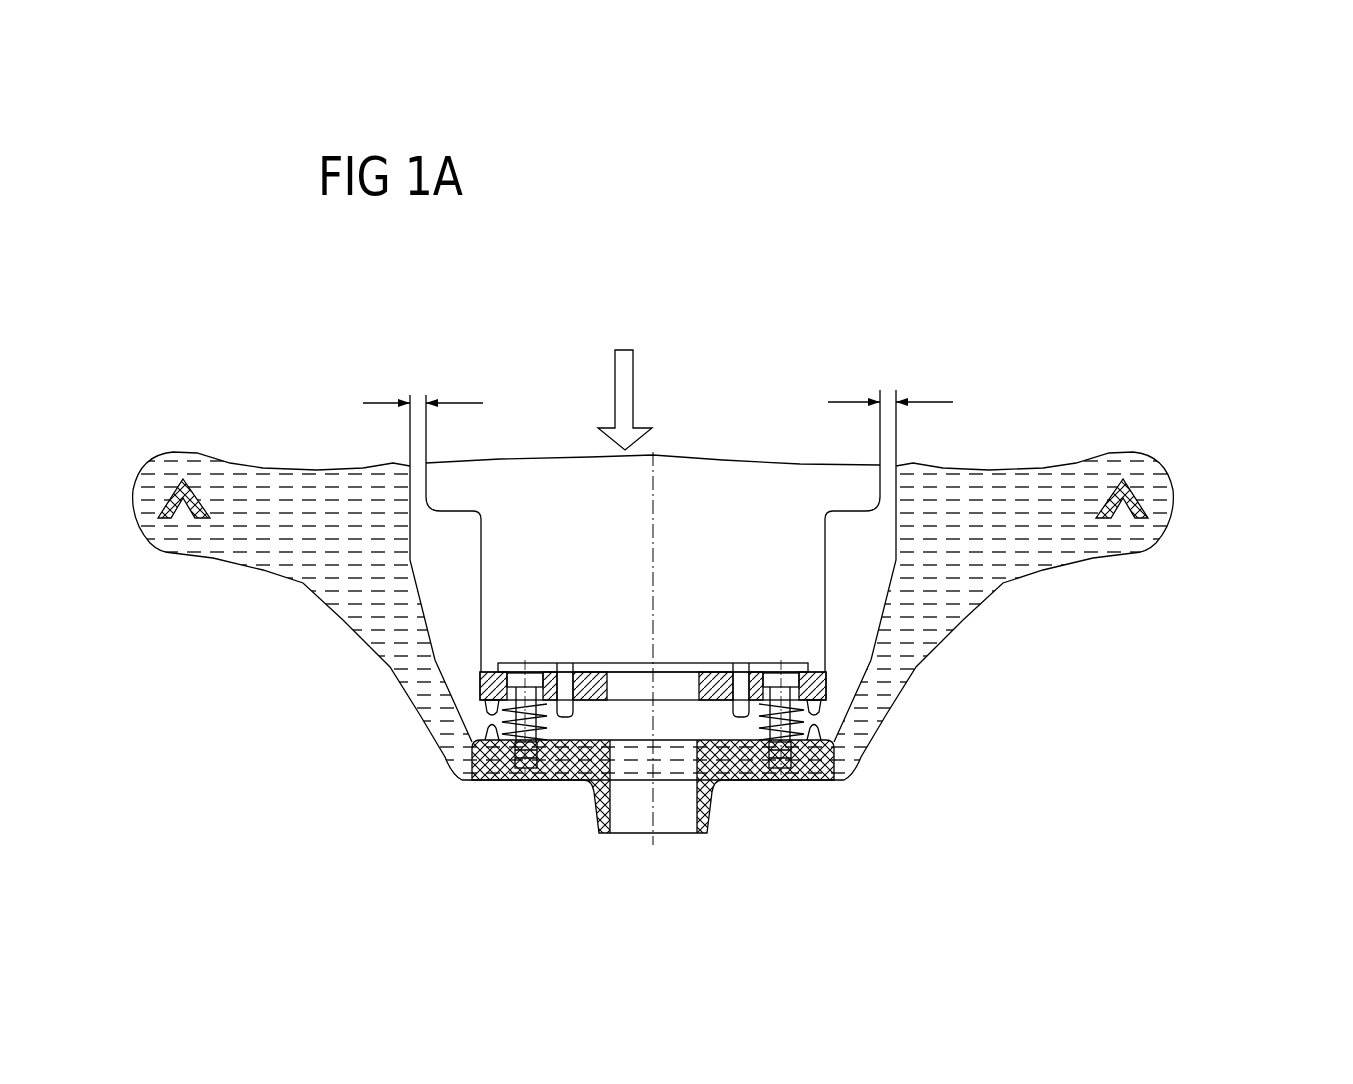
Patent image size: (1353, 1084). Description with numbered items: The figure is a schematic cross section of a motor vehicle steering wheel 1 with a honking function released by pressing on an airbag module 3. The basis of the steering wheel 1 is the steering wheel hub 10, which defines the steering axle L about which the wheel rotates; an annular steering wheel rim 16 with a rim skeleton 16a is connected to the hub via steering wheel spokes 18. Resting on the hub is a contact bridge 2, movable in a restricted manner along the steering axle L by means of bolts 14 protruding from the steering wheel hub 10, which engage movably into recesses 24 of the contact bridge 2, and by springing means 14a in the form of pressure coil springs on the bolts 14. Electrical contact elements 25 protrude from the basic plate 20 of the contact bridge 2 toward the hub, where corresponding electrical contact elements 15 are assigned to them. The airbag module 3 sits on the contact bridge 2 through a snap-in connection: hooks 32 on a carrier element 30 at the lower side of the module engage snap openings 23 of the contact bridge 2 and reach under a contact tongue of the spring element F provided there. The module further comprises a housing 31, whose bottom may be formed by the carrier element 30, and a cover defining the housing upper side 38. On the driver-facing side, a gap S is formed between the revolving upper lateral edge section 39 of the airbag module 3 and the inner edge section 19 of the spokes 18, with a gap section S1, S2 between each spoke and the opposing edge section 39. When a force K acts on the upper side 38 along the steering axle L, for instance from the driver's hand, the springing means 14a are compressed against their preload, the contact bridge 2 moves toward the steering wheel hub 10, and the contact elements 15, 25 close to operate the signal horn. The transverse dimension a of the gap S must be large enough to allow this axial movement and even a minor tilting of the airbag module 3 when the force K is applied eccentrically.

The motor vehicle steering wheel 1 is at (1192, 522).
The contact bridge 2 is at (477, 682).
The airbag module 3 is at (662, 440).
The steering wheel hub 10 is at (585, 783).
The bolts 14 is at (513, 758).
The springing means 14a is at (540, 732).
The electrical contact elements 15 is at (507, 737).
The steering wheel rim 16 is at (1125, 455).
The rim skeleton 16a is at (1135, 497).
The steering wheel spokes 18 is at (992, 488).
The inner edge section 19 is at (412, 488).
The basic plate 20 is at (597, 672).
The snap openings 23 is at (757, 678).
The recesses 24 is at (543, 673).
The electrical contact elements 25 is at (617, 688).
The carrier element 30 is at (667, 662).
The housing 31 is at (478, 562).
The hooks 32 is at (565, 665).
The housing upper side 38 is at (723, 460).
The upper lateral edge section 39 is at (425, 488).
The force K is at (619, 397).
The steering axle L is at (653, 528).
The spring element F is at (803, 713).
The gap S is at (882, 512).
The gap section S1 is at (417, 470).
The gap section S2 is at (885, 480).
The transverse dimension a is at (658, 385).